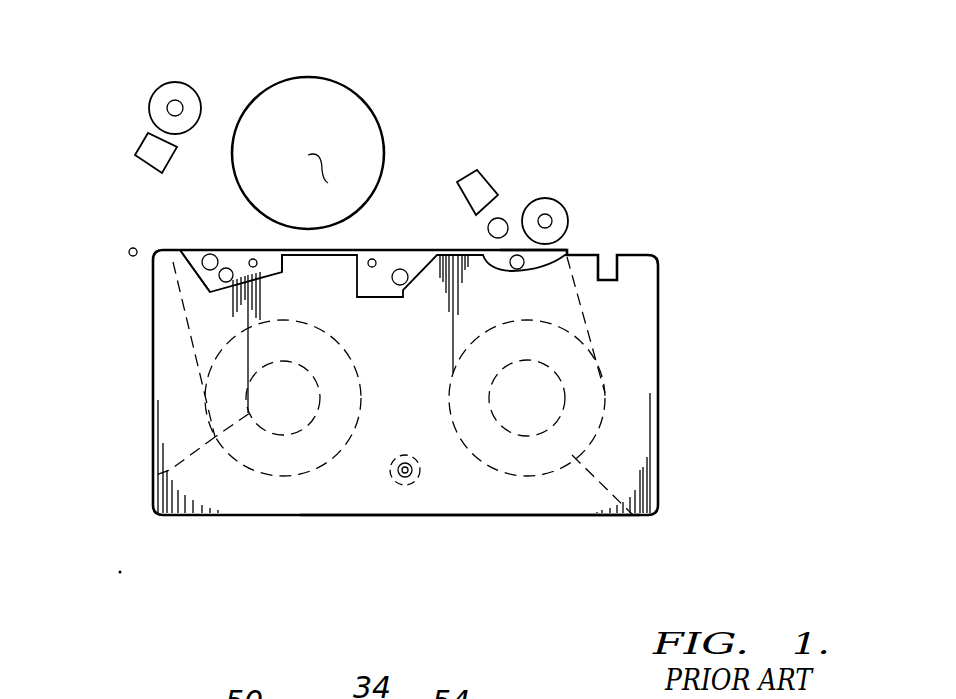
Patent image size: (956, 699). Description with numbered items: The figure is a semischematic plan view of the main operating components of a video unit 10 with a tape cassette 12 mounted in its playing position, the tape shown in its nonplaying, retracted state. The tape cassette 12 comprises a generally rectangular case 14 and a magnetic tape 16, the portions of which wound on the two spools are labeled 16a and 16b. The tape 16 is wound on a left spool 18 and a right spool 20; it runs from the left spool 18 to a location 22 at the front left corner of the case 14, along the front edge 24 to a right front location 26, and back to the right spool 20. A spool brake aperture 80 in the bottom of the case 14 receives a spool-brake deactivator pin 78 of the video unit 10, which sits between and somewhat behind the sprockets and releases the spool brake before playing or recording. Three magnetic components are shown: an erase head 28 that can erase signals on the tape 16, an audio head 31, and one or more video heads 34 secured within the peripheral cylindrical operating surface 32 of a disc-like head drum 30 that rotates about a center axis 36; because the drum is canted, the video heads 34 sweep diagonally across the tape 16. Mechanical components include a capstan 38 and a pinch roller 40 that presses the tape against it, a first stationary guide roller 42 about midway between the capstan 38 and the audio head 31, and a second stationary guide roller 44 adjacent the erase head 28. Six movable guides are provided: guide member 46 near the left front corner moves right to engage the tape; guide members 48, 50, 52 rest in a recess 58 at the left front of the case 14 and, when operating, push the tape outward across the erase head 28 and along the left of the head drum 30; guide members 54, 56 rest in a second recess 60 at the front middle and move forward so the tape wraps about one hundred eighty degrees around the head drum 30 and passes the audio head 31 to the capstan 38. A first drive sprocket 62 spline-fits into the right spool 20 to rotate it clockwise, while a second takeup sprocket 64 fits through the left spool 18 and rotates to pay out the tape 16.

The video unit 10 is at (518, 90).
The tape cassette 12 is at (738, 387).
The case 14 is at (553, 512).
The magnetic tape 16 is at (400, 250).
The tape portion on first reel 16a is at (190, 317).
The tape portion on second reel 16b is at (556, 322).
The left spool 18 is at (287, 477).
The right spool 20 is at (633, 517).
The front left corner location 22 is at (180, 250).
The front edge 24 is at (330, 248).
The right front location 26 is at (567, 250).
The erase head 28 is at (135, 150).
The head drum 30 is at (315, 88).
The audio head 31 is at (477, 187).
The peripheral operating surface 32 is at (372, 108).
The video head 34 is at (350, 87).
The center axis 36 is at (339, 178).
The capstan 38 is at (482, 253).
The pinch roller 40 is at (566, 216).
The first stationary guide roller 42 is at (503, 221).
The second stationary guide roller 44 is at (158, 108).
The guide member 46 is at (128, 249).
The guide member 48 is at (209, 254).
The guide member 50 is at (228, 267).
The guide member 52 is at (258, 267).
The guide member 54 is at (368, 265).
The guide member 56 is at (405, 285).
The recess 58 is at (241, 257).
The second recess 60 is at (387, 250).
The first drive sprocket 62 is at (557, 423).
The second takeup sprocket 64 is at (153, 476).
The spool-brake deactivator pin 78 is at (413, 478).
The spool brake aperture 80 is at (410, 493).